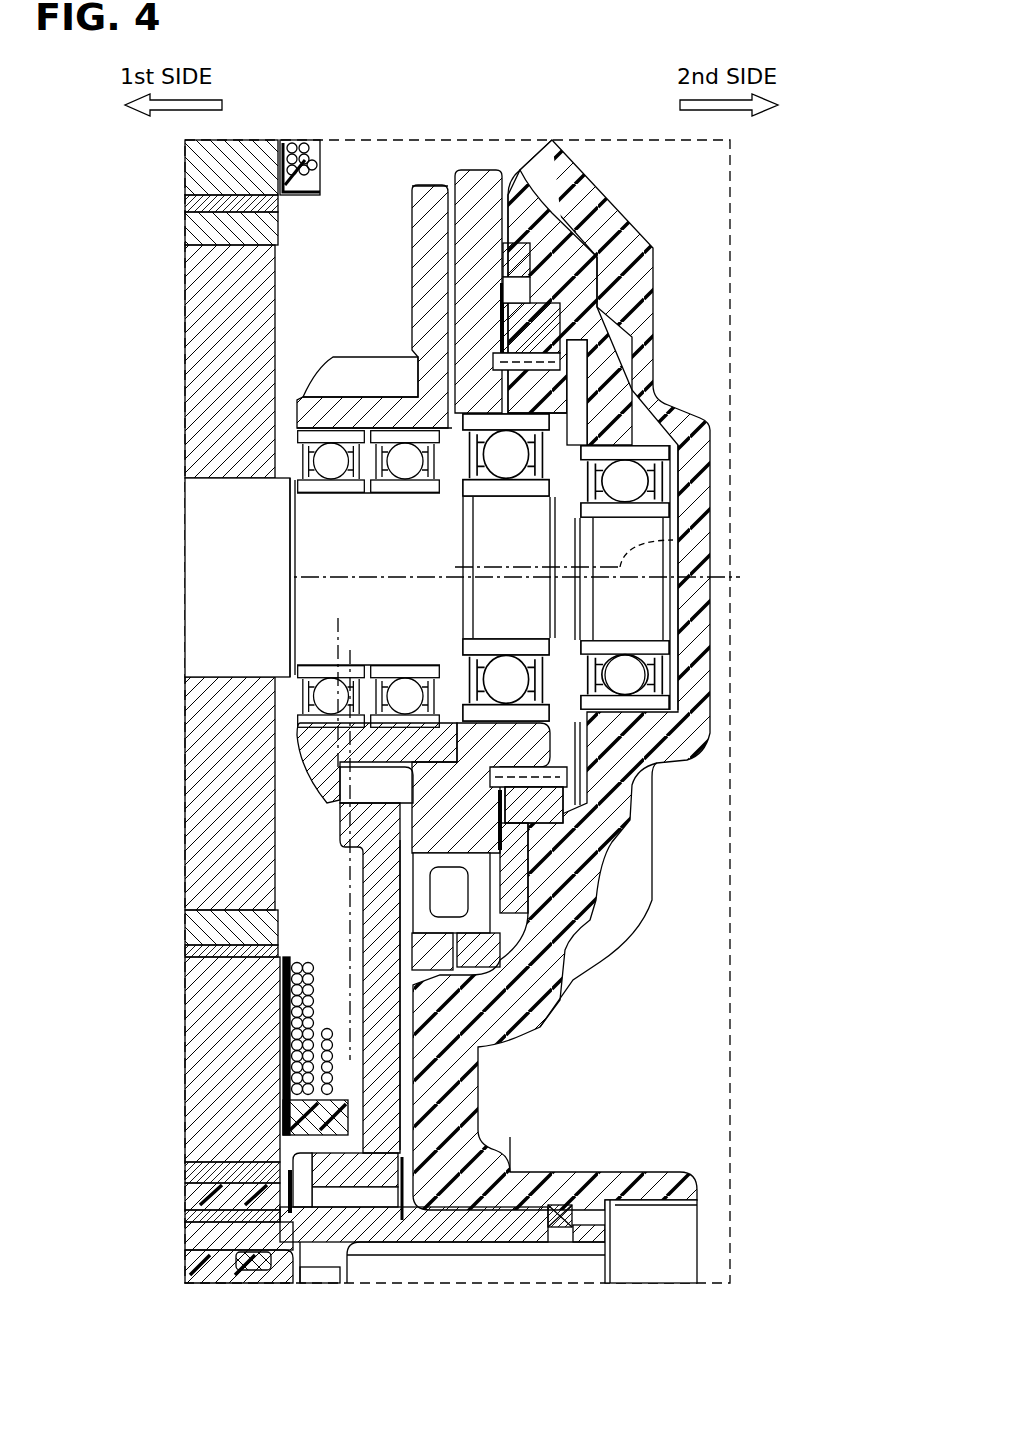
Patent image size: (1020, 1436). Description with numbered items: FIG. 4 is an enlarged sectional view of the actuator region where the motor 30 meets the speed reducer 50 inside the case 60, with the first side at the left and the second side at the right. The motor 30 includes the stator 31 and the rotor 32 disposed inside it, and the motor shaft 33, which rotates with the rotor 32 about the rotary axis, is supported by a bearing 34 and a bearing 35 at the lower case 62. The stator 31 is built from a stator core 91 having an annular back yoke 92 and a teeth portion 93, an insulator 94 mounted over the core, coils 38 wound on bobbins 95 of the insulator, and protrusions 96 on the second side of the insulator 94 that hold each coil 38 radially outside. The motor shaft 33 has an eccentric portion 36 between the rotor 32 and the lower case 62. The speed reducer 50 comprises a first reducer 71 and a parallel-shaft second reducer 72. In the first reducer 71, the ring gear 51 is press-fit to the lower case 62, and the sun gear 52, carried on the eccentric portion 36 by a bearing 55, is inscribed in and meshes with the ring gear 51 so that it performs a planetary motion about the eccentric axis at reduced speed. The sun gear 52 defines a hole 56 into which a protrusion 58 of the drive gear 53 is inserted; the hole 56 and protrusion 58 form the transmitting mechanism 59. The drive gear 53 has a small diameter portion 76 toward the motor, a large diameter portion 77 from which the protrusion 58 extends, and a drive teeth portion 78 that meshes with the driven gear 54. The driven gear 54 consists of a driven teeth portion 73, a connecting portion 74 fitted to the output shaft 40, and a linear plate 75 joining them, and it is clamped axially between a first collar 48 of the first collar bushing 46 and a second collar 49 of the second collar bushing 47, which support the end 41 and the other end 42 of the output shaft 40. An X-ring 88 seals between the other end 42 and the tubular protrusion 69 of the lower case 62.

The motor 30 is at (228, 490).
The stator 31 is at (205, 172).
The rotor 32 is at (210, 268).
The motor shaft 33 is at (330, 537).
The bearing 34 is at (330, 687).
The bearing 35 is at (630, 675).
The eccentric portion 36 is at (520, 537).
The coils 38 is at (310, 150).
The output shaft 40 is at (355, 1215).
The end 41 is at (220, 1240).
The other end 42 is at (520, 1250).
The first collar bushing 46 is at (272, 1272).
The second collar bushing 47 is at (462, 1240).
The first collar 48 is at (225, 1190).
The second collar 49 is at (404, 1195).
The speed reducer 50 is at (568, 355).
The ring gear 51 is at (530, 320).
The sun gear 52 is at (500, 270).
The drive gear 53 is at (265, 306).
The driven gear 54 is at (360, 877).
The bearing 55 is at (510, 680).
The hole 56 is at (485, 840).
The protrusion 58 is at (485, 892).
The transmitting mechanism 59 is at (627, 846).
The case 60 is at (575, 160).
The lower case 62 is at (535, 168).
The tubular protrusion 69 is at (640, 1202).
The first reducer 71 is at (470, 170).
The second reducer 72 is at (430, 185).
The driven teeth portion 73 is at (345, 787).
The connecting portion 74 is at (375, 1200).
The plate 75 is at (372, 1028).
The small diameter portion 76 is at (300, 412).
The large diameter portion 77 is at (415, 282).
The drive teeth portion 78 is at (335, 775).
The X-ring 88 is at (560, 1215).
The stator core 91 is at (217, 1139).
The back yoke 92 is at (213, 1152).
The teeth portion 93 is at (222, 1052).
The insulator 94 is at (295, 945).
The bobbin 95 is at (318, 1040).
The protrusions 96 is at (328, 1115).